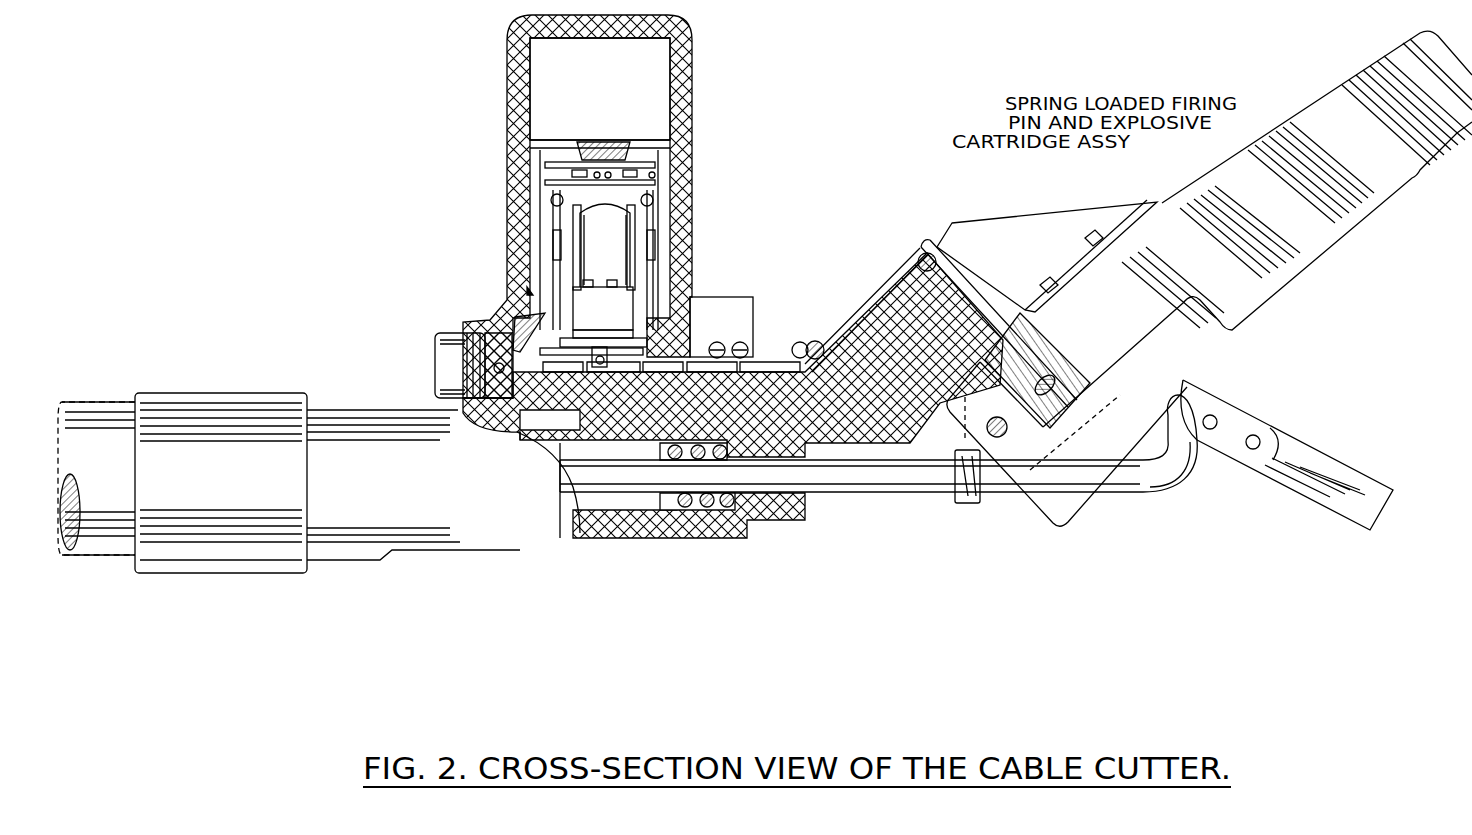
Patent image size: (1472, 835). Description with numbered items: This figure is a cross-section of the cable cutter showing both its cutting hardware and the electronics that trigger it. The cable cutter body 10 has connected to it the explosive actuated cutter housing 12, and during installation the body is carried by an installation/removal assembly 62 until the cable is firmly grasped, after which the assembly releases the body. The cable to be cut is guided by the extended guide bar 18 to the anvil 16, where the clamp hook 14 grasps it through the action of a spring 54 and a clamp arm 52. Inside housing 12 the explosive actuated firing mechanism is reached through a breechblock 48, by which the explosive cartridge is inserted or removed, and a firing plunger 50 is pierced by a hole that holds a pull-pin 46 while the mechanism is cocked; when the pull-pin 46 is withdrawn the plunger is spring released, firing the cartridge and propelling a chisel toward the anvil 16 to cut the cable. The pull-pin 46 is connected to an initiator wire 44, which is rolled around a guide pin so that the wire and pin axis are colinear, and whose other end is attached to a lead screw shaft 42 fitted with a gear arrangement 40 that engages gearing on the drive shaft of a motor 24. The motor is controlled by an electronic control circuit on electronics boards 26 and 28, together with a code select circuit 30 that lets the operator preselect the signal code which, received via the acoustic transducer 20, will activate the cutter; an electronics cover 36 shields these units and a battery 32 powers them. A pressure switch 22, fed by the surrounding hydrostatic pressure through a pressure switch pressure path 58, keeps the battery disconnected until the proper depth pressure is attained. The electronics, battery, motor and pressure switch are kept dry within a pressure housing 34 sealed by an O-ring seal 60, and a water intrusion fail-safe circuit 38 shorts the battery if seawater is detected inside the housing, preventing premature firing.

The cable cutter body 10 is at (420, 408).
The explosive actuated cutter housing 12 is at (1213, 170).
The clamp hook 14 is at (1190, 458).
The anvil 16 is at (1100, 482).
The extended guide bar 18 is at (1320, 448).
The acoustic transducer 20 is at (435, 338).
The pressure switch 22 is at (625, 285).
The motor 24 is at (625, 222).
The electronics board 26 is at (650, 197).
The electronics board 28 is at (553, 201).
The code select circuit 30 is at (540, 181).
The battery 32 is at (692, 60).
The pressure housing 34 is at (508, 68).
The electronics cover 36 is at (672, 143).
The water intrusion fail-safe circuit 38 is at (672, 163).
The gear arrangement 40 is at (603, 362).
The lead screw shaft 42 is at (690, 358).
The initiator wire 44 is at (905, 258).
The pull-pin 46 is at (930, 240).
The breechblock 48 is at (1386, 54).
The firing plunger 50 is at (1073, 378).
The clamp arm 52 is at (843, 492).
The spring 54 is at (688, 505).
The pressure switch pressure path 58 is at (545, 440).
The O-ring seal 60 is at (518, 290).
The installation/removal assembly 62 is at (232, 576).